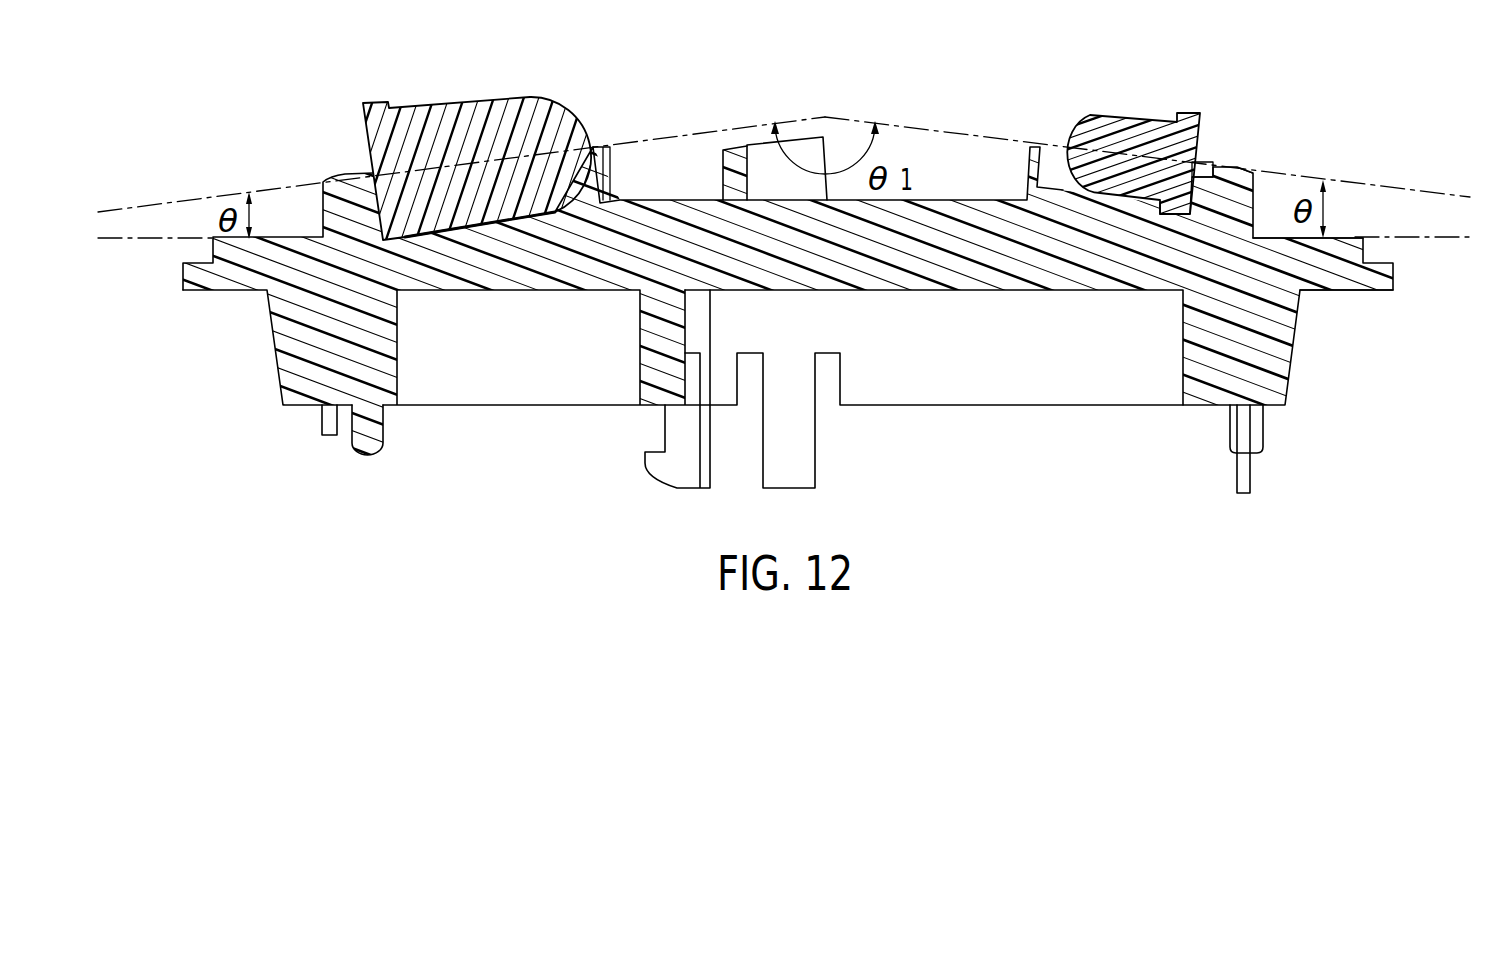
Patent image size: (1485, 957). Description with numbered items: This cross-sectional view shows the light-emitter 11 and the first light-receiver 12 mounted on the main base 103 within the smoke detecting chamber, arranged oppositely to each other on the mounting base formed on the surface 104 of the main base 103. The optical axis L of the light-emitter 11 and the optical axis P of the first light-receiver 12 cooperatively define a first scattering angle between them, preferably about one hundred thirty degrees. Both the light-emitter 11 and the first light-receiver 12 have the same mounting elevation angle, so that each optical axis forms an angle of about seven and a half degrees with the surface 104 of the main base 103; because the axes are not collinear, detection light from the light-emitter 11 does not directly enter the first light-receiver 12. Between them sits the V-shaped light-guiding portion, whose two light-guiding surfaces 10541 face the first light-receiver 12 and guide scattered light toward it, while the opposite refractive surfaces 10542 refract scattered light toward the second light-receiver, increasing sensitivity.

The main base 103 is at (1351, 289).
The surface of the main base 104 is at (1273, 237).
The light-emitter 11 is at (468, 100).
The first light-receiver 12 is at (1150, 117).
The light-guiding surfaces 10541 is at (770, 170).
The refractive surfaces 10542 is at (722, 170).
The optical axis of the light-emitter L is at (645, 141).
The optical axis of the first light-receiver P is at (980, 136).